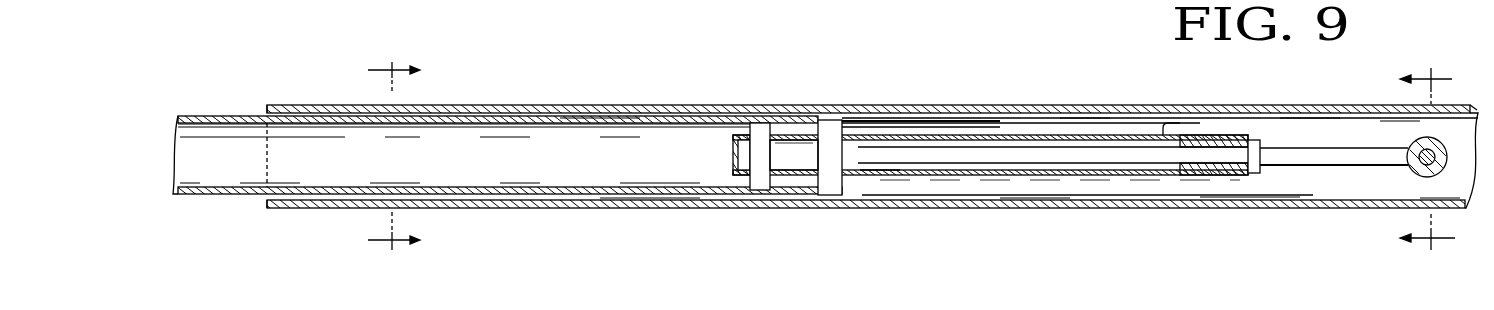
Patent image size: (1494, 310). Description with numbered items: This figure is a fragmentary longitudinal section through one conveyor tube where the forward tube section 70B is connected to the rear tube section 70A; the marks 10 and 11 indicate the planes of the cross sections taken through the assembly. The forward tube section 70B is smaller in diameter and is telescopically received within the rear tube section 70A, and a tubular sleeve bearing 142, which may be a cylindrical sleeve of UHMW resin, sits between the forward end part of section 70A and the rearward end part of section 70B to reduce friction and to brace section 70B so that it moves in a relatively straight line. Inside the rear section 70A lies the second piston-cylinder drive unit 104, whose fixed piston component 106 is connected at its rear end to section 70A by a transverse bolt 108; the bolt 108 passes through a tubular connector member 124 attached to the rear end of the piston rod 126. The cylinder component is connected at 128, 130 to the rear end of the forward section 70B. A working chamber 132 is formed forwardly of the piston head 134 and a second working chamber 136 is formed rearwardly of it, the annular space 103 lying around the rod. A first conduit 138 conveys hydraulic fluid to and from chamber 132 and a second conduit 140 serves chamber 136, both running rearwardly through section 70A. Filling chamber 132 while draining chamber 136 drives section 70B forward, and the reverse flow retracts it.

The rear tube section 70A is at (933, 105).
The forward tube section 70B is at (227, 115).
The tubular sleeve bearing 142 is at (487, 196).
The second piston-cylinder drive unit 104 is at (950, 175).
The annular passage 103 is at (1010, 186).
The fixed piston component 106 is at (1065, 158).
The connection 128 is at (758, 191).
The connection 130 is at (830, 196).
The working chamber 132 is at (802, 163).
The piston head 134 is at (877, 174).
The second working chamber 136 is at (1087, 143).
The first conduit 138 is at (855, 119).
The second conduit 140 is at (1178, 122).
The piston rod 126 is at (1318, 149).
The tubular connector member 124 is at (1443, 140).
The transverse bolt 108 is at (1422, 173).
The section line 10- 10 is at (394, 157).
The section line 11- 11 is at (1427, 162).